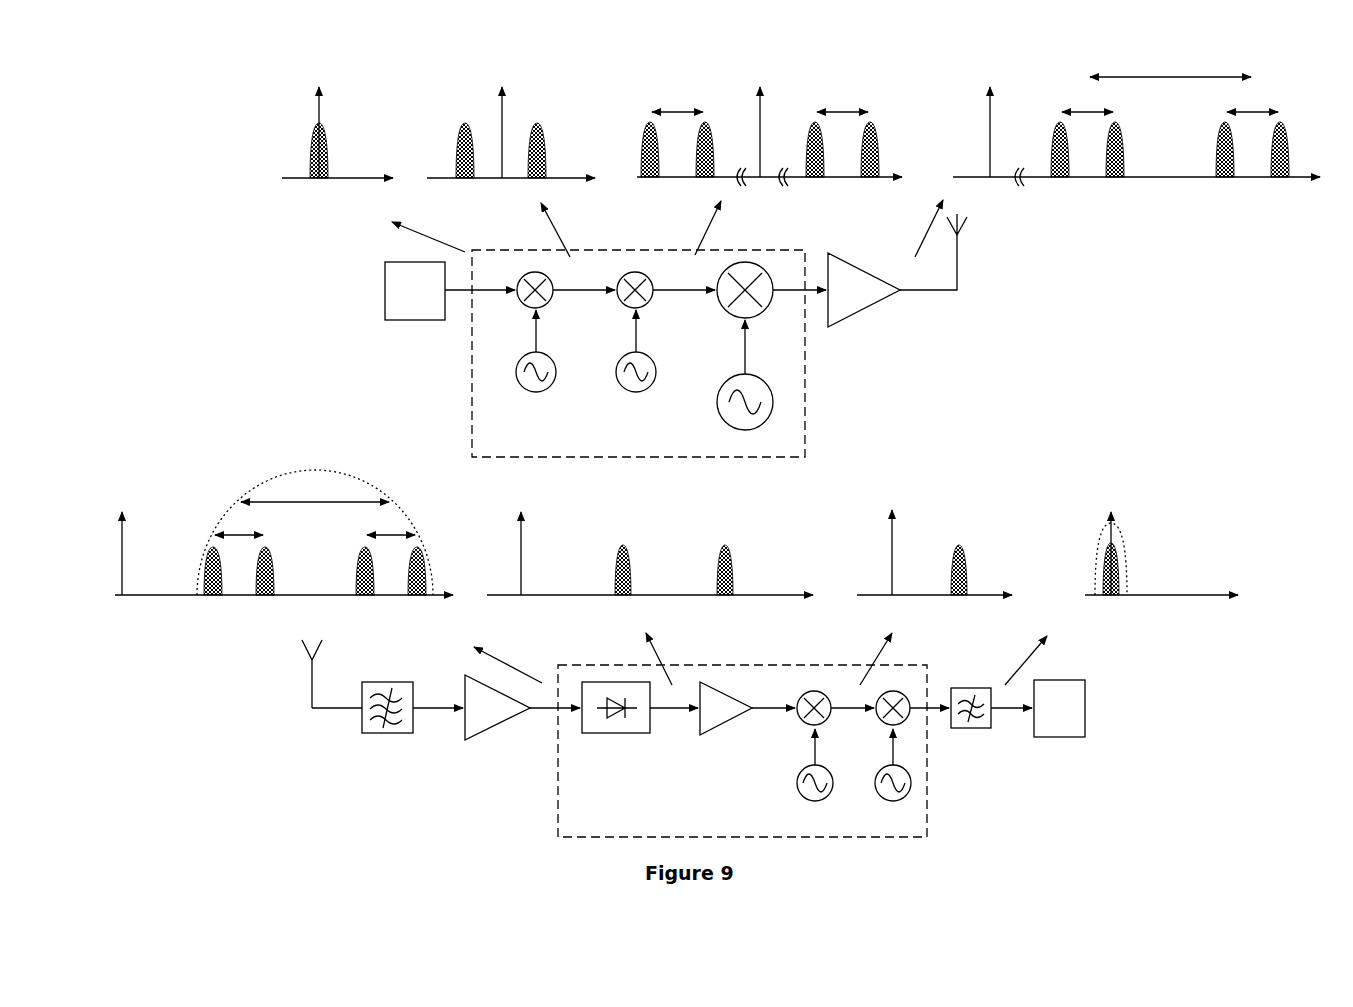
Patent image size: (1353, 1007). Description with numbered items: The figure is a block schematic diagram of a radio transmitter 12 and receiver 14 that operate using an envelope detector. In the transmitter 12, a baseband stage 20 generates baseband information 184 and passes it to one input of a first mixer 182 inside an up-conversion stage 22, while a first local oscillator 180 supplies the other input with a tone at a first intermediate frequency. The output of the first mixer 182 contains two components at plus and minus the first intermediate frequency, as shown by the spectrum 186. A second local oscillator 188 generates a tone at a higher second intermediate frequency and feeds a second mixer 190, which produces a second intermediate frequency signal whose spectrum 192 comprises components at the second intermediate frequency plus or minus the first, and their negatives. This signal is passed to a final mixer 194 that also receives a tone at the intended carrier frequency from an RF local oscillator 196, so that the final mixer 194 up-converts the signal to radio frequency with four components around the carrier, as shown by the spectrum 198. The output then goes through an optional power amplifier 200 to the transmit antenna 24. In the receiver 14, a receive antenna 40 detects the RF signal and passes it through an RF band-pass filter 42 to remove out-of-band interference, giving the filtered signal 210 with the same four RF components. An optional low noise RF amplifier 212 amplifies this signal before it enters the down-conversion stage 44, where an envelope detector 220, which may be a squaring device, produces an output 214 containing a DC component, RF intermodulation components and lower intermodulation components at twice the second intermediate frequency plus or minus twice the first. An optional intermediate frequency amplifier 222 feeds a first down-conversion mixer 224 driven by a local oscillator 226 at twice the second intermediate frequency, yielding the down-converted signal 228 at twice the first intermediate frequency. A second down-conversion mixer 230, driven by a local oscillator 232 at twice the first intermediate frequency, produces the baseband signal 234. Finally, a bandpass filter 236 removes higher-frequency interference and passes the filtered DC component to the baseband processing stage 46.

The transmitter 12 is at (226, 292).
The receiver 14 is at (230, 699).
The baseband stage 20 is at (385, 270).
The up-conversion stage 22 is at (806, 417).
The transmit antenna 24 is at (965, 222).
The receive antenna 40 is at (305, 640).
The RF band-pass filter 42 is at (385, 681).
The down-conversion stage 44 is at (928, 765).
The baseband processing stage 46 is at (1072, 680).
The first local oscillator 180 is at (515, 372).
The first mixer 182 is at (530, 272).
The baseband information 184 is at (291, 93).
The first intermediate frequency signal spectrum 186 is at (470, 93).
The second local oscillator 188 is at (616, 373).
The second mixer 190 is at (633, 272).
The second intermediate frequency signal spectrum 192 is at (737, 93).
The final mixer 194 is at (765, 268).
The RF local oscillator 196 is at (722, 385).
The RF output signal spectrum 198 is at (1037, 93).
The power amplifier 200 is at (868, 273).
The bandpass filter output signal 210 is at (240, 473).
The low noise RF amplifier 212 is at (462, 690).
The envelope detector output spectrum 214 is at (687, 526).
The envelope detector 220 is at (602, 681).
The intermediate frequency amplifier 222 is at (722, 690).
The first down-conversion mixer 224 is at (813, 690).
The local oscillator 226 is at (798, 775).
The down-converted signal 228 is at (959, 524).
The second down-conversion mixer 230 is at (898, 693).
The local oscillator 232 is at (877, 770).
The baseband down-converted signal 234 is at (1095, 521).
The bandpass filter 236 is at (982, 688).